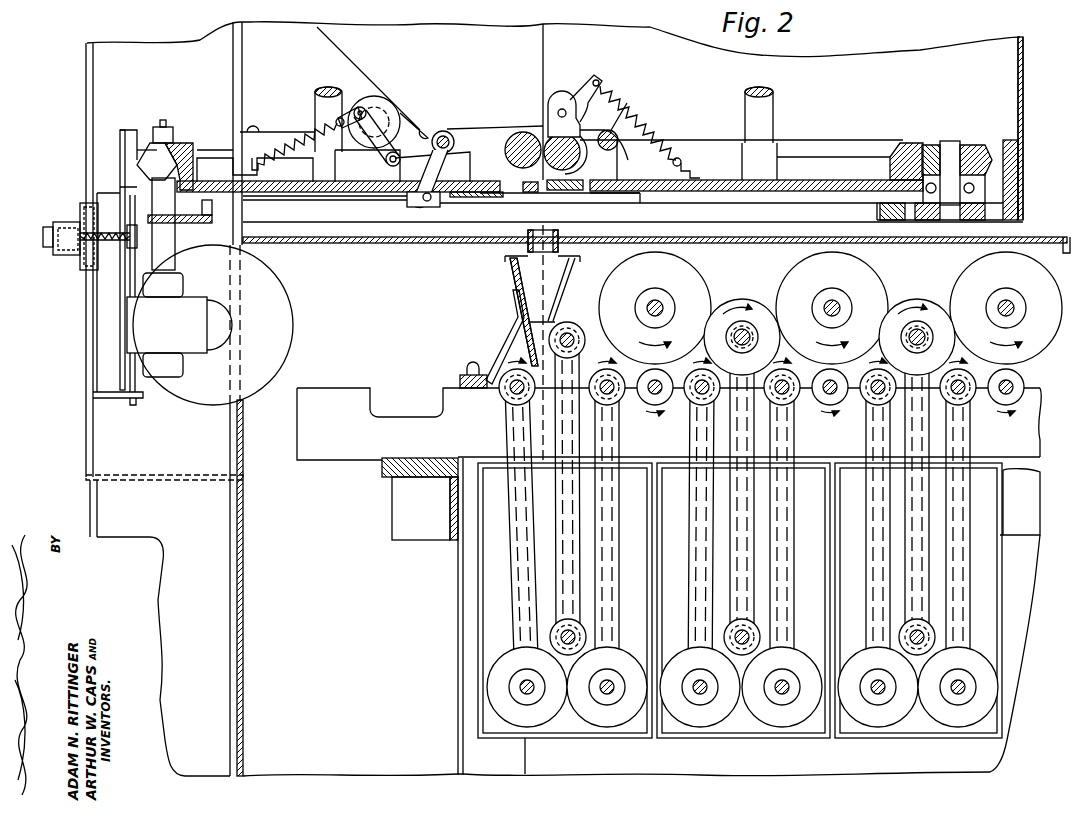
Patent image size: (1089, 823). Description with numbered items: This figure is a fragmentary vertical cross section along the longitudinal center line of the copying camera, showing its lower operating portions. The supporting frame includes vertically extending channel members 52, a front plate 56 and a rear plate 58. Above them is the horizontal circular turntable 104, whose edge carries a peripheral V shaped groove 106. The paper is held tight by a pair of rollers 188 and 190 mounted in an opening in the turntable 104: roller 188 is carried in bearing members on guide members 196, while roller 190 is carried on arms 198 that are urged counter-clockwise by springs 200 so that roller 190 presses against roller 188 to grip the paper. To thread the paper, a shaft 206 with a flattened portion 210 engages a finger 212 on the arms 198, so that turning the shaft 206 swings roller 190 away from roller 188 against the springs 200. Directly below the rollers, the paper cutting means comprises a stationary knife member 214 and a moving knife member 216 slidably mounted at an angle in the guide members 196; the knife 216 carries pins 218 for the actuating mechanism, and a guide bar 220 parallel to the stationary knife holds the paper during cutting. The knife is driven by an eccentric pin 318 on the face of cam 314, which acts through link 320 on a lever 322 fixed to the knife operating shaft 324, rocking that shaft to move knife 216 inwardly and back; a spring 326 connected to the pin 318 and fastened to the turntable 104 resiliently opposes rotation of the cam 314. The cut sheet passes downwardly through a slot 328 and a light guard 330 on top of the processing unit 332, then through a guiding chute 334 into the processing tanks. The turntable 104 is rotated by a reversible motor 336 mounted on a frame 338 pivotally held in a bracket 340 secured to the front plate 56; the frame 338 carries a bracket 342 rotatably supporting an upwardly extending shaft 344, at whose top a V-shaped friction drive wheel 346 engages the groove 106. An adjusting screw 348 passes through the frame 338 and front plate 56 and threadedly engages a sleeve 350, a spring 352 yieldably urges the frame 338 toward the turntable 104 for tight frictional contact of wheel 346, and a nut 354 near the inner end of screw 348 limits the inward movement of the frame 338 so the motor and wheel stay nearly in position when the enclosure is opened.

The channel member 52 is at (186, 571).
The front plate 56 is at (87, 442).
The rear plate 58 is at (244, 605).
The turntable 104 is at (180, 160).
The V shaped groove 106 is at (925, 152).
The winding roller 188 is at (521, 137).
The pressure roller 190 is at (580, 156).
The guide member 196 is at (645, 195).
The arm 198 is at (575, 99).
The spring 200 is at (602, 87).
The shaft 206 is at (640, 118).
The flattened portion 210 is at (628, 130).
The finger 212 is at (633, 141).
The stationary knife member 214 is at (572, 190).
The moving knife member 216 is at (507, 192).
The pin 218 is at (412, 203).
The guide bar 220 is at (532, 192).
The cam 314 is at (378, 108).
The eccentric pin 318 is at (358, 93).
The link 320 is at (396, 119).
The lever 322 is at (422, 150).
The knife operating shaft 324 is at (452, 142).
The spring 326 is at (292, 140).
The slot 328 is at (546, 192).
The light guard 330 is at (556, 260).
The processing unit 332 is at (474, 348).
The guiding chute 334 is at (517, 278).
The reversible motor 336 is at (268, 292).
The frame 338 is at (120, 322).
The bracket 340 is at (110, 394).
The bracket 342 is at (146, 150).
The shaft 344 is at (170, 236).
The V-shaped friction drive wheel 346 is at (148, 158).
The adjusting screw 348 is at (72, 226).
The sleeve 350 is at (58, 252).
The spring 352 is at (105, 238).
The nut 354 is at (130, 225).